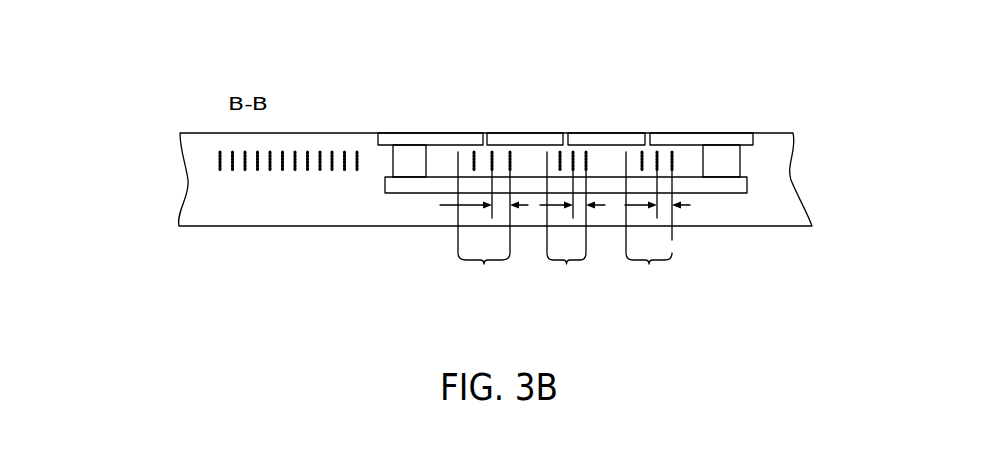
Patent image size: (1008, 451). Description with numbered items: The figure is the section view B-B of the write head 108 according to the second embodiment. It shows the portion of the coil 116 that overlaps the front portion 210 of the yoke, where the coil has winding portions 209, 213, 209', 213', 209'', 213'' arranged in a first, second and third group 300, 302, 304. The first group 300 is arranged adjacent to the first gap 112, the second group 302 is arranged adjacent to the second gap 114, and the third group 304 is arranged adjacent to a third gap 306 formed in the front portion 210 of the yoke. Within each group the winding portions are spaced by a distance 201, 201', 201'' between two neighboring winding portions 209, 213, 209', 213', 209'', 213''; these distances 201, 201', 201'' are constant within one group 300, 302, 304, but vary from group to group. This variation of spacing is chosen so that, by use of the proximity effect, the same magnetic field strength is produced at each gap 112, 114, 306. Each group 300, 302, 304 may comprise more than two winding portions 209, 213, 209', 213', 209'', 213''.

The write head 108 is at (136, 117).
The coil 116 is at (263, 180).
The first gap 112 is at (483, 133).
The second gap 114 is at (563, 133).
The third gap 306 is at (650, 133).
The front portion of the yoke 210 is at (728, 133).
The winding portion 209 is at (484, 111).
The winding portion 213 is at (510, 94).
The winding portion 209' is at (600, 90).
The winding portion 213' is at (631, 85).
The winding portion 209'' is at (714, 85).
The winding portion 213'' is at (773, 189).
The distance 201 is at (462, 186).
The distance 201' is at (585, 250).
The distance 201'' is at (686, 186).
The first group 300 is at (484, 224).
The second group 302 is at (566, 224).
The third group 304 is at (649, 224).